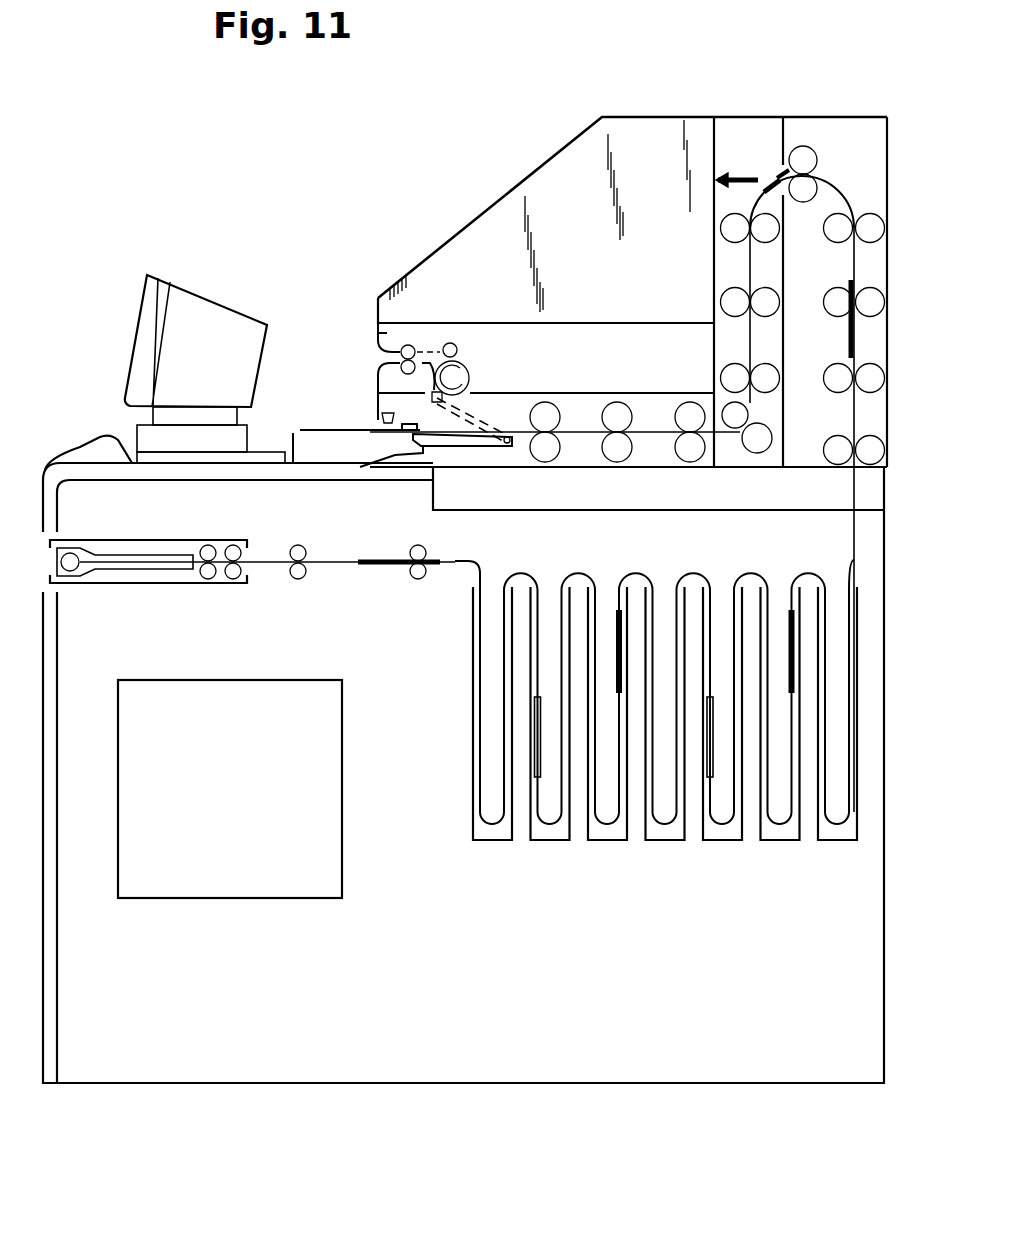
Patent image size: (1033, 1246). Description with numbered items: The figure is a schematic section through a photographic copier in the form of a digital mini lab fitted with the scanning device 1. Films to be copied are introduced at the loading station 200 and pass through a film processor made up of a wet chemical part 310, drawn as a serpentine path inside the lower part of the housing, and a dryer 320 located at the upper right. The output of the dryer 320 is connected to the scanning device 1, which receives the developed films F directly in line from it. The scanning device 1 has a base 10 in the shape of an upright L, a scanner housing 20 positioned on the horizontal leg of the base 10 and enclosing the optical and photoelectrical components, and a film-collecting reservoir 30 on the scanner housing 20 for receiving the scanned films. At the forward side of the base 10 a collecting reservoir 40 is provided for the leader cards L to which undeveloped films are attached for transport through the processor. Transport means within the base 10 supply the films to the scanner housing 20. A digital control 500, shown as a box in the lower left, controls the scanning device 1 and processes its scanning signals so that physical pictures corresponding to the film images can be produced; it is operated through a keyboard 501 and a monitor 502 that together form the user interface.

The scanning device 1 is at (490, 185).
The base 10 is at (746, 140).
The scanner housing 20 is at (375, 330).
The film-collecting reservoir 30 is at (432, 276).
The collecting reservoir 40 is at (333, 455).
The loading station 200 is at (156, 578).
The wet chemical part 310 is at (671, 792).
The dryer 320 is at (870, 150).
The digital control 500 is at (218, 870).
The keyboard 501 is at (98, 450).
The monitor 502 is at (150, 305).
The developed films F is at (325, 560).
The label L is at (383, 566).